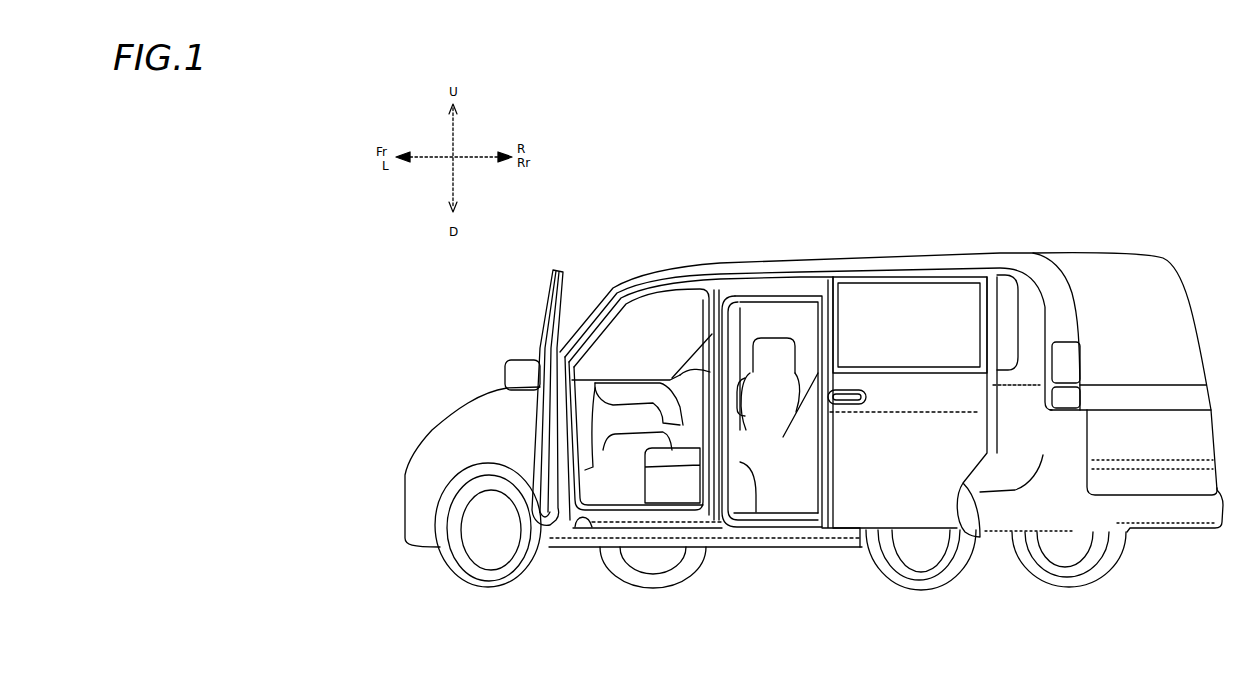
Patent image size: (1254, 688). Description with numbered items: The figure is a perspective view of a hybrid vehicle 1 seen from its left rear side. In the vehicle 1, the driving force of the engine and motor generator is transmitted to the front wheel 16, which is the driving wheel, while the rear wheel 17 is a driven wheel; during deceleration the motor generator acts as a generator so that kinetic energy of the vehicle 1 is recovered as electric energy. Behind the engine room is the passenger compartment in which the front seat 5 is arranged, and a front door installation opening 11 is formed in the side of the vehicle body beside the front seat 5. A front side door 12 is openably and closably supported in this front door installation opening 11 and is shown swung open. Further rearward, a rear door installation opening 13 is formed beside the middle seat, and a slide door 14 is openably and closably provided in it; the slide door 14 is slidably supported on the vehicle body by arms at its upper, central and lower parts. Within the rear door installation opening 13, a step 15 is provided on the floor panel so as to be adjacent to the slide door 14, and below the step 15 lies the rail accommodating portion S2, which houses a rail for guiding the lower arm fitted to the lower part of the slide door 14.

The vehicle 1 is at (1030, 228).
The front seat 5 is at (778, 345).
The front door installation opening 11 is at (592, 532).
The front side door 12 is at (545, 292).
The rear door installation opening 13 is at (754, 462).
The slide door 14 is at (903, 488).
The step 15 is at (822, 524).
The front wheel 16 is at (497, 552).
The rear wheel 17 is at (940, 555).
The rail accommodating portion S2 is at (780, 523).